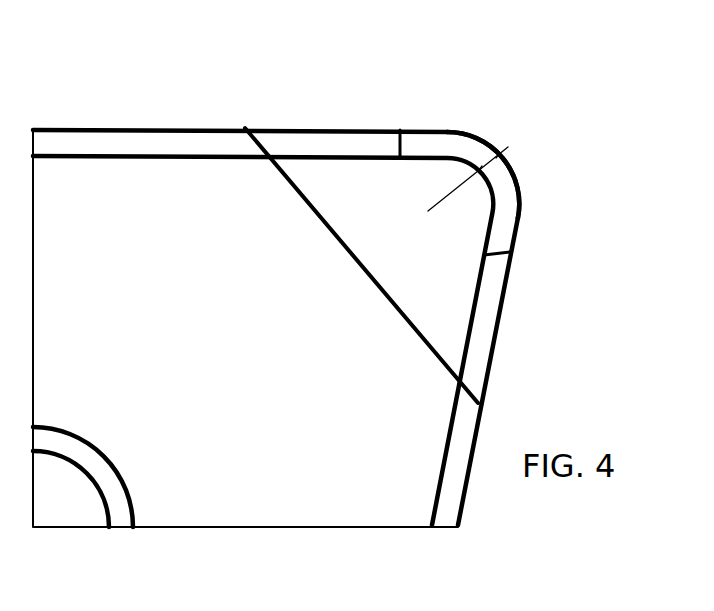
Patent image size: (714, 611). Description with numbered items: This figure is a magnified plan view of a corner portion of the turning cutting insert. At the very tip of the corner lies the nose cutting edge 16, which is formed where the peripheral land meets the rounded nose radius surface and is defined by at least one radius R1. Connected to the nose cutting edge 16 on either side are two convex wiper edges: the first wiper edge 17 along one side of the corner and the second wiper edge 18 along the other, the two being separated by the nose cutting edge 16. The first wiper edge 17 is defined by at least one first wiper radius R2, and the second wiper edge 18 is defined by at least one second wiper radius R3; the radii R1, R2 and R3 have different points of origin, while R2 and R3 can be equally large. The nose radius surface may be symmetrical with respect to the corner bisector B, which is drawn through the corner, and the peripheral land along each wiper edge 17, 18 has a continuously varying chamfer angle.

The second wiper edge 18 is at (442, 130).
The nose cutting edge 16 is at (490, 142).
The first wiper edge 17 is at (521, 221).
The second wiper radius R3 is at (417, 104).
The nose cutting edge radius R1 is at (536, 158).
The first wiper radius R2 is at (540, 235).
The corner bisector B is at (430, 211).